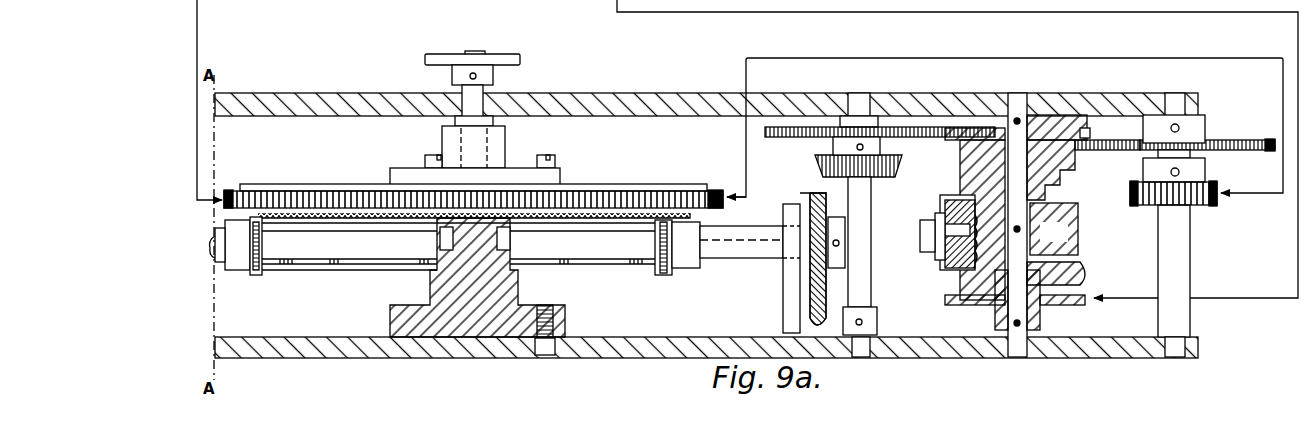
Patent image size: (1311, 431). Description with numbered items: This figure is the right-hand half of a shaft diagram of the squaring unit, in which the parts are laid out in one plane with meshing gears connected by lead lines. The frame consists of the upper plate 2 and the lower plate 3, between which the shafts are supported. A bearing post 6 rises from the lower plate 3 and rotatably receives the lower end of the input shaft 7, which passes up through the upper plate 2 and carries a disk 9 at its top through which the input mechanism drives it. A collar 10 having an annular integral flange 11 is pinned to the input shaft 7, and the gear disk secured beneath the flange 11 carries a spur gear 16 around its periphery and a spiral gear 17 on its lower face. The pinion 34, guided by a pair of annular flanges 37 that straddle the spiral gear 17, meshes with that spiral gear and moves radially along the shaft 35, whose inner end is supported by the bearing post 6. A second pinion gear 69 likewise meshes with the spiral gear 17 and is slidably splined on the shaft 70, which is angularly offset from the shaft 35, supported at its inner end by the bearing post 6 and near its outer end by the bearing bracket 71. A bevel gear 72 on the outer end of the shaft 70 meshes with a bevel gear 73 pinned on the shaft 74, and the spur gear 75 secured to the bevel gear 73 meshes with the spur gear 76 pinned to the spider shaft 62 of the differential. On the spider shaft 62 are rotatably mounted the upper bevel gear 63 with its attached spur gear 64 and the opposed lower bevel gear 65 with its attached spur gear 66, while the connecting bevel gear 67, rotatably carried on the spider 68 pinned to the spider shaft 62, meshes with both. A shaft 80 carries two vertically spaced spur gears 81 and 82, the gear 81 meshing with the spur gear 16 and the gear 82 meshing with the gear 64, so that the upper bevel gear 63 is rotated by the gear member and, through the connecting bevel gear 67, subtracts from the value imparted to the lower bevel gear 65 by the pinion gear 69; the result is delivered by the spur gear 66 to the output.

The upper plate 2 is at (255, 94).
The lower plate 3 is at (268, 359).
The bearing post 6 is at (518, 287).
The input shaft 7 is at (493, 90).
The disk 9 is at (520, 62).
The collar 10 is at (505, 136).
The annular integral flange 11 is at (560, 170).
The spur gear 16 is at (320, 185).
The spiral gear 17 is at (343, 226).
The pinion 34 is at (256, 276).
The shaft 35 is at (377, 262).
The annular flanges 37 is at (250, 275).
The spider shaft 62 is at (1020, 92).
The upper bevel gear 63 is at (1075, 185).
The spur gear 64 is at (952, 150).
The lower bevel gear 65 is at (1088, 278).
The spur gear 66 is at (1080, 306).
The connecting bevel gear 67 is at (945, 285).
The spider 68 is at (1054, 229).
The pinion gear 69 is at (663, 276).
The shaft 70 is at (612, 258).
The bearing bracket 71 is at (784, 310).
The bevel gear 72 is at (806, 175).
The bevel gear 73 is at (893, 178).
The shaft 74 is at (872, 261).
The spur gear 75 is at (764, 127).
The spur gear 76 is at (1090, 133).
The shaft 80 is at (1191, 268).
The spur gear 81 is at (1215, 205).
The spur gear 82 is at (1252, 140).